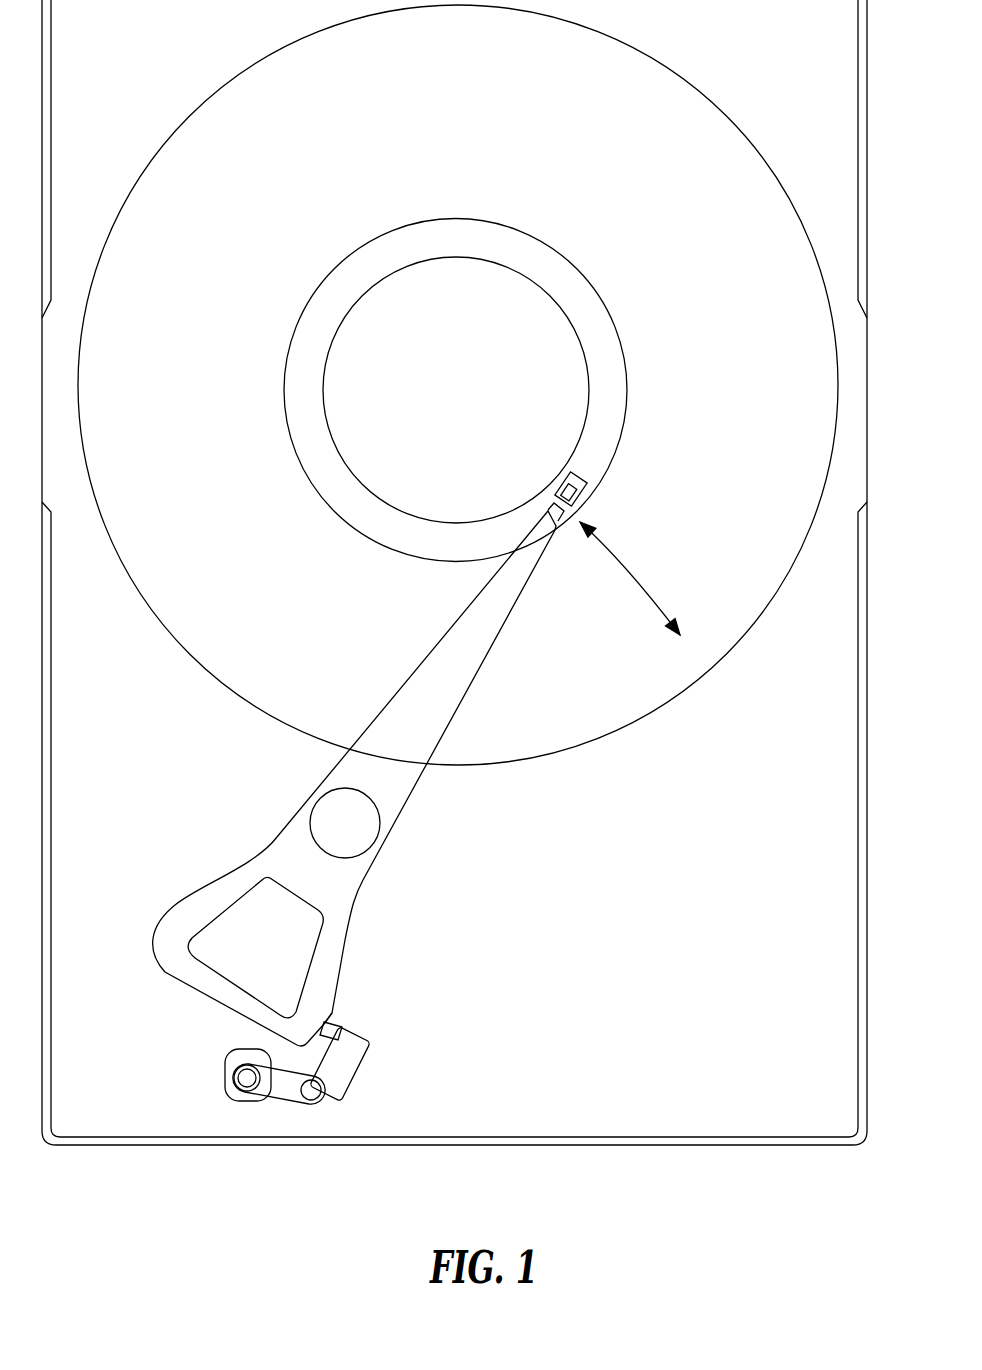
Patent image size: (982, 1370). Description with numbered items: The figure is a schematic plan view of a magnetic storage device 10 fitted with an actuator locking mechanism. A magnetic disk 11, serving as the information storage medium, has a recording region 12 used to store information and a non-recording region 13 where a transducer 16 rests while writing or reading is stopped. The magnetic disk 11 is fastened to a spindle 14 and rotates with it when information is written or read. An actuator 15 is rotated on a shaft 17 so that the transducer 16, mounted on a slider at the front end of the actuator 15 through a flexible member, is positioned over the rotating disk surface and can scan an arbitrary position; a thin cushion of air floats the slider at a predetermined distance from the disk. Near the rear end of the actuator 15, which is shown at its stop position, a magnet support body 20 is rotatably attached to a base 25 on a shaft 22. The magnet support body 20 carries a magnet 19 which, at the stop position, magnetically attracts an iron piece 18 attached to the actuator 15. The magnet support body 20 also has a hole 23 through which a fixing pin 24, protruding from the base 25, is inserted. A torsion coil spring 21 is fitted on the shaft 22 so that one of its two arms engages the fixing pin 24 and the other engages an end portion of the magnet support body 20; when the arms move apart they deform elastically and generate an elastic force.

The magnetic storage device 10 is at (440, 1160).
The magnetic disk 11 is at (710, 108).
The recording region 12 is at (725, 396).
The non-recording region 13 is at (590, 292).
The spindle 14 is at (473, 396).
The actuator 15 is at (410, 797).
The transducer 16 is at (580, 476).
The shaft 17 is at (318, 810).
The iron piece 18 is at (333, 1018).
The magnet 19 is at (340, 1026).
The magnet support body 20 is at (358, 1048).
The torsion coil spring 21 is at (275, 1085).
The shaft 22 is at (322, 1090).
The hole 23 is at (235, 1070).
The fixing pin 24 is at (236, 1092).
The base 25 is at (584, 872).